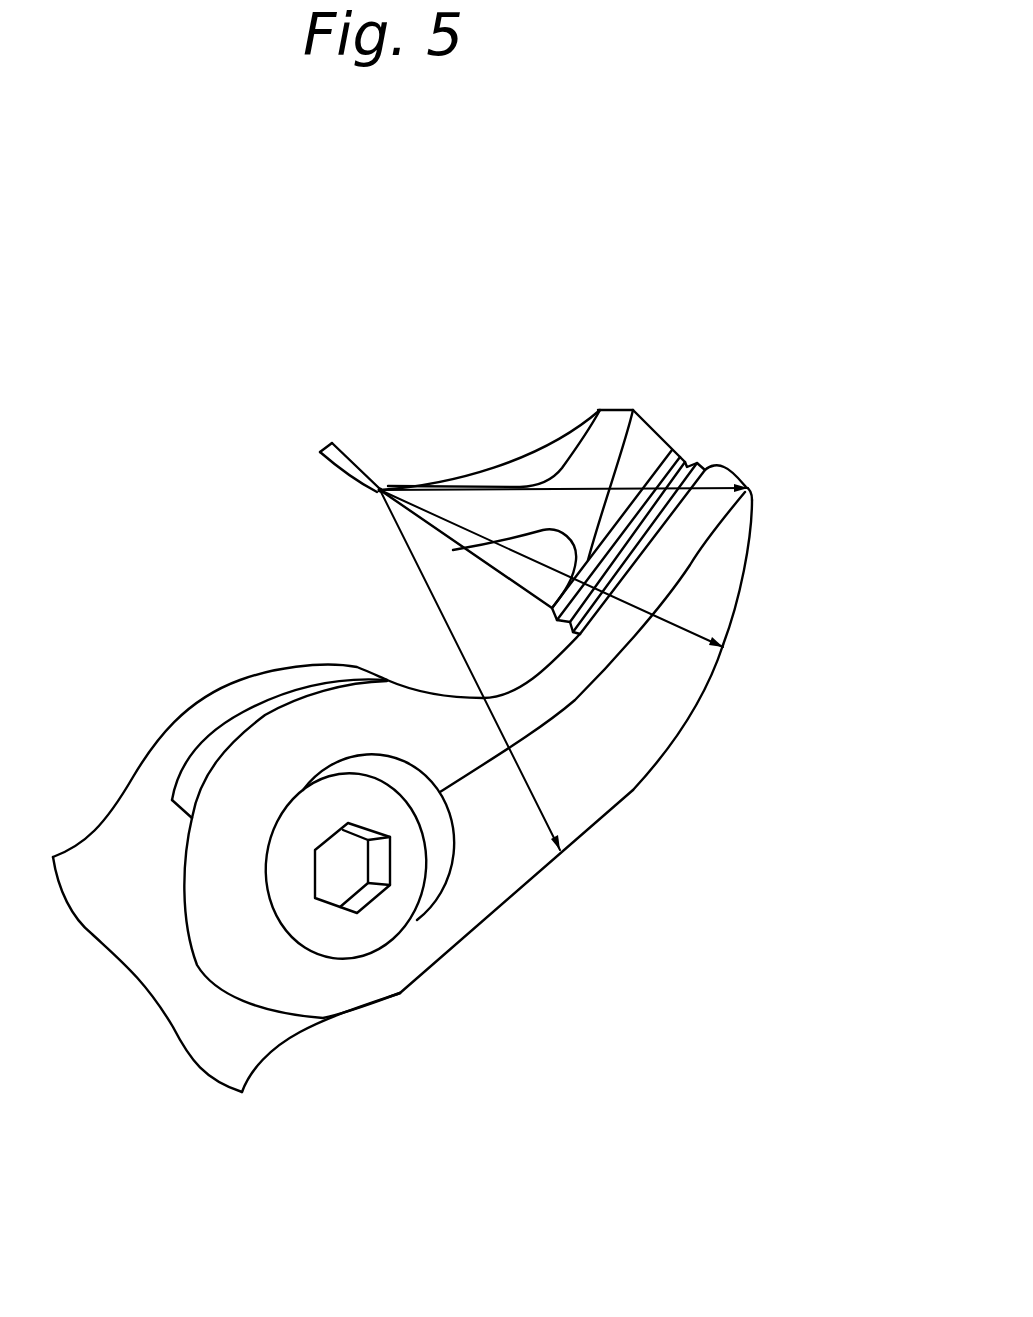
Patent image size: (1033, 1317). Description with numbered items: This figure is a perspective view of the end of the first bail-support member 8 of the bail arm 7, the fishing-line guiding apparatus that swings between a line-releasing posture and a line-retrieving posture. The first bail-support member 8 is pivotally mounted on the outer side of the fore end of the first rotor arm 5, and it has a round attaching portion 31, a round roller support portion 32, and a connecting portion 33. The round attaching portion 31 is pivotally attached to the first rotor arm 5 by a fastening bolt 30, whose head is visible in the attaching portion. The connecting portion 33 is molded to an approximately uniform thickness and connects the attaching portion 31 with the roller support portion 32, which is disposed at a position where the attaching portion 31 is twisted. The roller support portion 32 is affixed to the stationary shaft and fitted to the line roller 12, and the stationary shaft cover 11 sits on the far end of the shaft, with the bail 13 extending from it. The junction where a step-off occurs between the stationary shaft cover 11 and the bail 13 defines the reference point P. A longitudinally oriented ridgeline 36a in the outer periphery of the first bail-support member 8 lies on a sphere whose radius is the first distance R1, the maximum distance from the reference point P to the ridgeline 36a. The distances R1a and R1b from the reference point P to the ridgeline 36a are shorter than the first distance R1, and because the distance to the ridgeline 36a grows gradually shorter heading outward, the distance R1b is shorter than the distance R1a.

The first rotor arm 5 is at (260, 1037).
The bail arm 7 is at (770, 522).
The first bail-support member 8 is at (578, 869).
The stationary shaft cover 11 is at (580, 432).
The line roller 12 is at (691, 462).
The bail 13 is at (343, 460).
The fastening bolt 30 is at (403, 885).
The round attaching portion 31 is at (377, 980).
The round roller support portion 32 is at (720, 475).
The connecting portion 33 is at (630, 753).
The longitudinally oriented ridgeline 36a is at (617, 817).
The reference point P is at (380, 489).
The first distance R1 is at (479, 670).
The distance R1a is at (551, 568).
The distance R1b is at (564, 515).